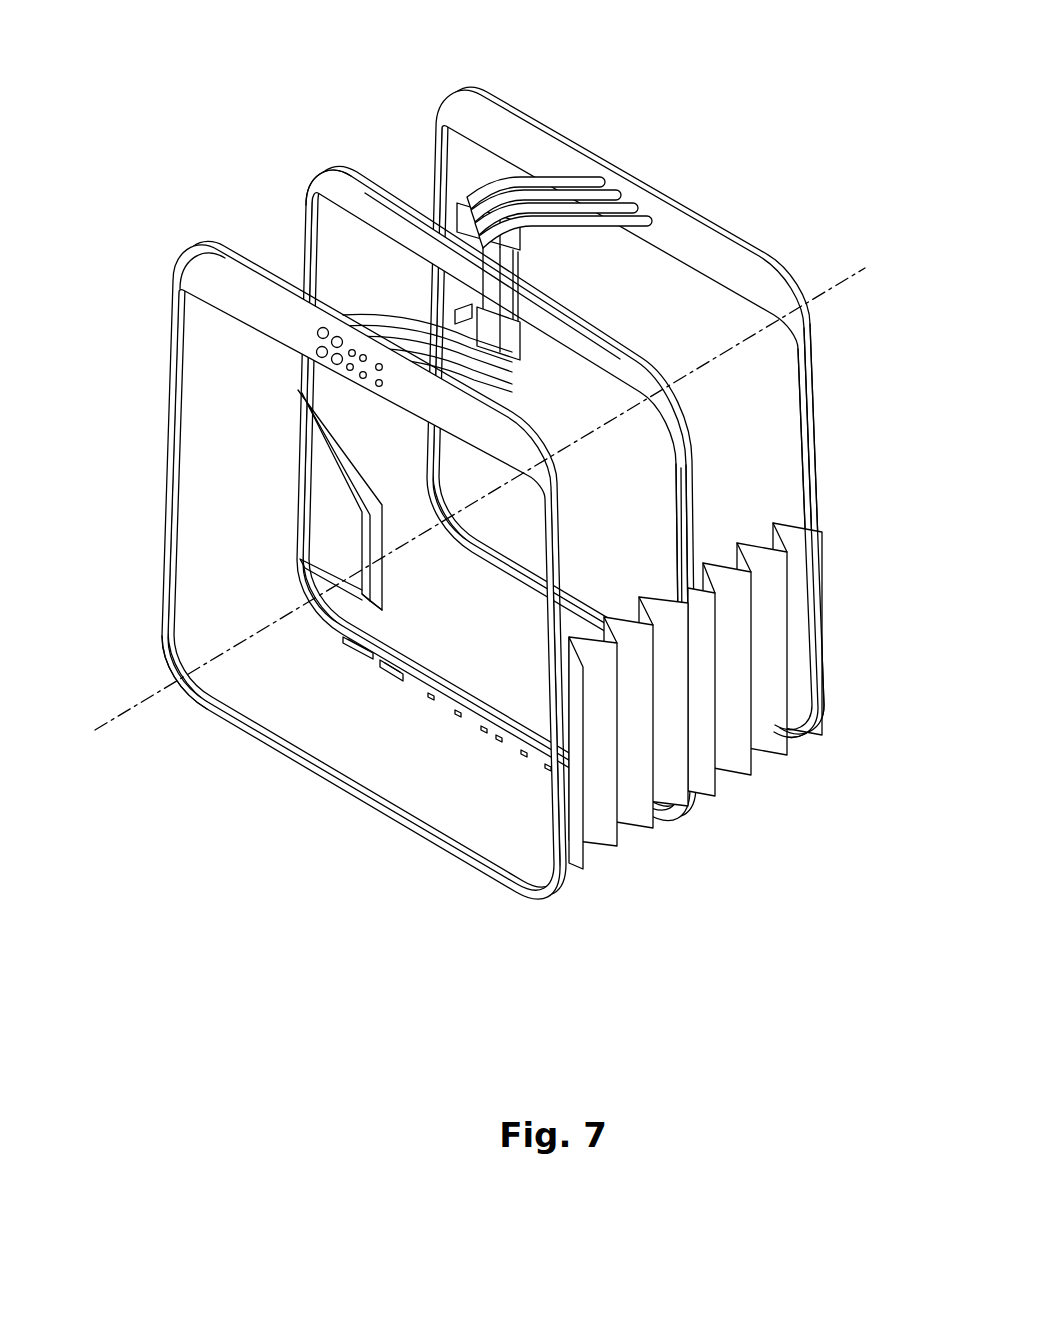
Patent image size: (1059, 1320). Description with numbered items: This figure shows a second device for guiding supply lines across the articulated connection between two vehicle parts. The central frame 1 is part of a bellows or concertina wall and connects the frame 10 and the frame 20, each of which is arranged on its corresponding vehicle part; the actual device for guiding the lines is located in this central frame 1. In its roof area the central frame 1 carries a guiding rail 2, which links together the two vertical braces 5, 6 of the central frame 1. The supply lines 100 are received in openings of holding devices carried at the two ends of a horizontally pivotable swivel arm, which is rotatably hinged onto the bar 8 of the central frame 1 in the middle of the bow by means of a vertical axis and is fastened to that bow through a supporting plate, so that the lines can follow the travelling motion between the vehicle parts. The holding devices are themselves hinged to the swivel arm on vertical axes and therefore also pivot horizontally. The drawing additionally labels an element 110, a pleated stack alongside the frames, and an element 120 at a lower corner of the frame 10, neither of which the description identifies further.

The central frame 1 is at (313, 178).
The guiding rail 2 is at (633, 385).
The vertical brace 5 is at (632, 430).
The vertical brace 6 is at (300, 470).
The bar 8 is at (577, 301).
The frame 10 is at (320, 777).
The frame 20 is at (781, 262).
The supply lines 100 is at (392, 315).
The pleated filter medium 110 is at (675, 753).
The frame corner 120 is at (164, 687).